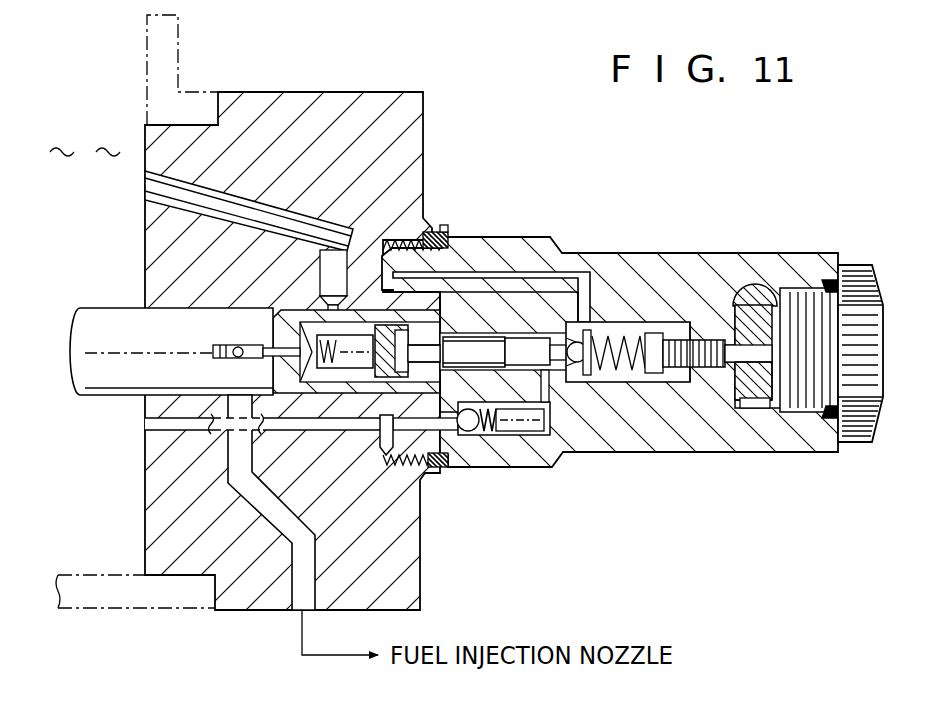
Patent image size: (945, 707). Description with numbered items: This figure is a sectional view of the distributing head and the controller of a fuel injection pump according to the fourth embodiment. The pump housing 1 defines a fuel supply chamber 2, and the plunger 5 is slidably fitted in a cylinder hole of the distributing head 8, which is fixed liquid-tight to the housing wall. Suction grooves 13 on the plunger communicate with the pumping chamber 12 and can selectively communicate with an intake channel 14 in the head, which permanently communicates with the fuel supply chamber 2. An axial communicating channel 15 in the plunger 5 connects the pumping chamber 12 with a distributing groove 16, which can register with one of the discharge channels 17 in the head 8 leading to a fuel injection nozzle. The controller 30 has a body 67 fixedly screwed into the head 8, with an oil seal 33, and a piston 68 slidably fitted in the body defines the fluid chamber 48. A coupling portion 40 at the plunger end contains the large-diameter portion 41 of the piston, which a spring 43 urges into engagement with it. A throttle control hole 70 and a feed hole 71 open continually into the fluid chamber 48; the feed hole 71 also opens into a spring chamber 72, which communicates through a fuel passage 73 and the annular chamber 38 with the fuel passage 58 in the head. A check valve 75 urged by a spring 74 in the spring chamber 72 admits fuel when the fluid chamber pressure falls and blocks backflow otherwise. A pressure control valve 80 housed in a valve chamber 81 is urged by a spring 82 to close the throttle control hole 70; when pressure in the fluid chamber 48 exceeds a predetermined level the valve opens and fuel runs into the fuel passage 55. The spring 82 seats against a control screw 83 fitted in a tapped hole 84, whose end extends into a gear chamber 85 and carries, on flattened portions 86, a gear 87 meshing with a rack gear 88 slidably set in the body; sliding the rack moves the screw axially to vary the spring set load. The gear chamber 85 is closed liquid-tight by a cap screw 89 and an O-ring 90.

The pump housing 1 is at (180, 31).
The fuel supply chamber 2 is at (85, 154).
The plunger 5 is at (98, 396).
The distributing head 8 is at (291, 100).
The pumping chamber 12 is at (451, 322).
The suction grooves 13 is at (306, 311).
The intake channel 14 is at (226, 195).
The communicating channel 15 is at (274, 323).
The distributing groove 16 is at (213, 352).
The discharge channel 17 is at (290, 571).
The controller 30 is at (536, 230).
The oil seal 33 is at (440, 230).
The annular chamber 38 is at (380, 448).
The coupling portion 40 is at (402, 318).
The large-diameter portion 41 is at (391, 382).
The spring 43 is at (324, 380).
The fluid chamber 48 is at (522, 338).
The fuel passage 55 is at (566, 262).
The fuel passage 58 is at (178, 432).
The body 67 is at (641, 453).
The piston 68 is at (480, 345).
The throttle control hole 70 is at (556, 362).
The feed hole 71 is at (541, 388).
The spring chamber 72 is at (520, 434).
The fuel passage 73 is at (396, 430).
The spring 74 is at (496, 436).
The check valve 75 is at (466, 436).
The pressure control valve 80 is at (570, 343).
The valve chamber 81 is at (600, 330).
The spring 82 is at (648, 333).
The control screw 83 is at (692, 340).
The tapped hole 84 is at (698, 378).
The gear chamber 85 is at (768, 412).
The flattened portions 86 is at (738, 394).
The gear 87 is at (735, 305).
The rack gear 88 is at (762, 275).
The cap screw 89 is at (883, 350).
The O-ring 90 is at (824, 279).